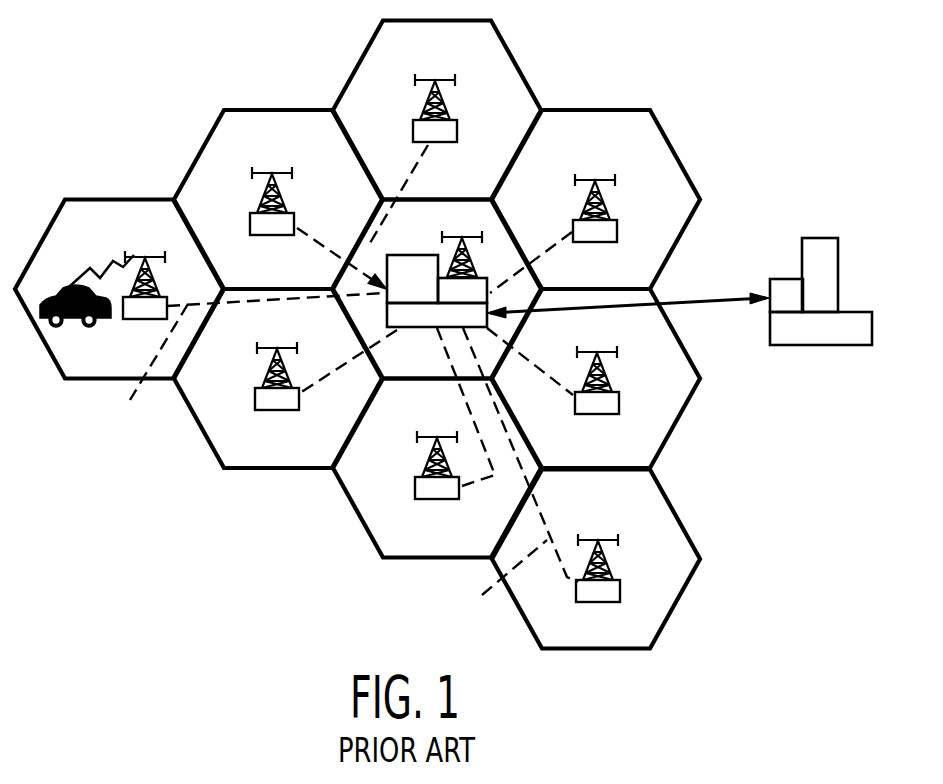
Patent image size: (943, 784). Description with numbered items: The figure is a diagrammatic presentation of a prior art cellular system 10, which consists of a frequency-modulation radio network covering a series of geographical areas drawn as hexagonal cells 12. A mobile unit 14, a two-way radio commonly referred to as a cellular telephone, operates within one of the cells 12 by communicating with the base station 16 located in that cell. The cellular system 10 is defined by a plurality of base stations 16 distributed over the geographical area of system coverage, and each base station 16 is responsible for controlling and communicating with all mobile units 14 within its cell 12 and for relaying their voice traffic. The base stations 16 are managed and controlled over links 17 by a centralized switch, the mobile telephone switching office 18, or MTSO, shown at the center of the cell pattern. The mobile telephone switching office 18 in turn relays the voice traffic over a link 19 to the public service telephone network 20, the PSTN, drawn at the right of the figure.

The cellular system 10 is at (96, 27).
The cell 12 is at (210, 130).
The mobile unit 14 is at (66, 330).
The base station 16 is at (138, 257).
The link 17 is at (483, 594).
The mobile telephone switching office 18 is at (398, 255).
The link 19 is at (717, 300).
The public service telephone network 20 is at (822, 237).